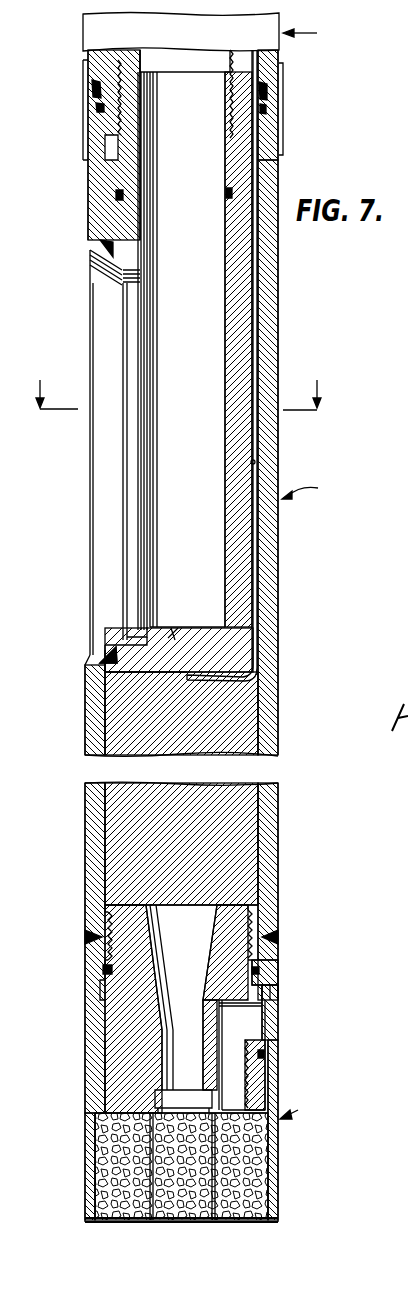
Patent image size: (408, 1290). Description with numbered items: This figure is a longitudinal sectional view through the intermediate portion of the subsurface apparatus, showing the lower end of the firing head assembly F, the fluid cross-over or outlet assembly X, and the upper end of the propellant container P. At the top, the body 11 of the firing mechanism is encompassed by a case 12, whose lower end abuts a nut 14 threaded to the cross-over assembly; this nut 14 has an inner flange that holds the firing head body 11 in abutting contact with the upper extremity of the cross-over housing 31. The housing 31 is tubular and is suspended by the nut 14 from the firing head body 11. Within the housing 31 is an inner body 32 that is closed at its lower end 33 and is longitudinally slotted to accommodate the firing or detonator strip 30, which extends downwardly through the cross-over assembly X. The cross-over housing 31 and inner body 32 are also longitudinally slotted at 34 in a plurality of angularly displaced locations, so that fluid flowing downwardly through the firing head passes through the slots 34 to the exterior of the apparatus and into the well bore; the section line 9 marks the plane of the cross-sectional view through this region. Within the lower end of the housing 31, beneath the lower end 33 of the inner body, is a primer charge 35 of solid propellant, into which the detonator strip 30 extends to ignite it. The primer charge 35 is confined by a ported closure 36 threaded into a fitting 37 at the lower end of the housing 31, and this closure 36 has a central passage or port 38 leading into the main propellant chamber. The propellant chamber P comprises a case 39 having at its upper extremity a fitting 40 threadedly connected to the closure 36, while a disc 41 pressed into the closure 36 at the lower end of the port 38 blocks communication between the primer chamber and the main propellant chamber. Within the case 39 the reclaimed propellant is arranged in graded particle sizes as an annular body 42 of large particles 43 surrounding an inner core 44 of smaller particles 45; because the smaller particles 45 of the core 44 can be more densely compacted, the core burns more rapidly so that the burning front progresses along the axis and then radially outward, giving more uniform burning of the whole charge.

The case 12 is at (93, 33).
The body of the firing mechanism 11 is at (120, 73).
The nut 14 is at (283, 105).
The cross-over housing 31 is at (268, 283).
The detonator strip 30 is at (257, 337).
The inner body 32 is at (232, 390).
The longitudinal slots 34 is at (108, 468).
The lower end of the inner body 33 is at (170, 637).
The primer charge 35 is at (248, 785).
The ported closure 36 is at (237, 931).
The fitting 37 is at (270, 956).
The central passage or port 38 is at (168, 993).
The disc 41 is at (190, 1090).
The fitting 40 is at (273, 1062).
The large particles 43 is at (250, 1157).
The case 39 is at (270, 1171).
The annular body 42 is at (282, 1203).
The inner core 44 is at (110, 1229).
The smaller particles 45 is at (140, 1236).
The section line 9- 9 is at (177, 383).
The firing head assembly F is at (307, 34).
The fluid cross-over assembly X is at (308, 489).
The propellant container P is at (295, 1107).